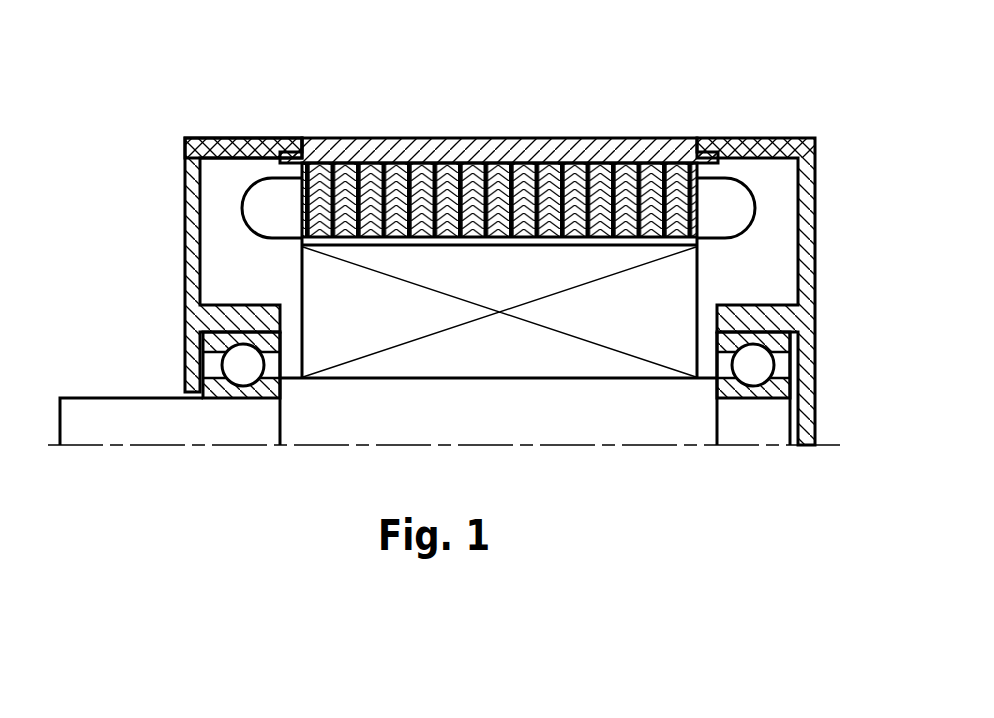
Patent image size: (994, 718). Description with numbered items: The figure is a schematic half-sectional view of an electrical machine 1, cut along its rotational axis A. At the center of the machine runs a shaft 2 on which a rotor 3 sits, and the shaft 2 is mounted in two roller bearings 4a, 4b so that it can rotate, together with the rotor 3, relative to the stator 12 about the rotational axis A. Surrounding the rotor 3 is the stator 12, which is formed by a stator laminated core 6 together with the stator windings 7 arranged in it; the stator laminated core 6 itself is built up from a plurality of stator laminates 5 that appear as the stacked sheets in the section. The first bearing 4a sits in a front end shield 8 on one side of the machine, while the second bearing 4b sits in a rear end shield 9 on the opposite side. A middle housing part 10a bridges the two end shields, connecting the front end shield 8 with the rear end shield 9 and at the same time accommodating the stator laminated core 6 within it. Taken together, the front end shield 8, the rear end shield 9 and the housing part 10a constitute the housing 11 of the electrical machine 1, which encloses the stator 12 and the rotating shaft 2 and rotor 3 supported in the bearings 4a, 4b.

The electrical machine 1 is at (112, 65).
The shaft 2 is at (138, 415).
The rotor 3 is at (675, 290).
The first bearing 4a is at (240, 362).
The second bearing 4b is at (760, 367).
The stator laminates 5 is at (367, 175).
The stator laminated core 6 is at (303, 62).
The stator windings 7 is at (738, 205).
The front end shield 8 is at (195, 272).
The rear end shield 9 is at (807, 322).
The housing part 10a is at (676, 150).
The housing 11 is at (247, 137).
The stator 12 is at (245, 192).